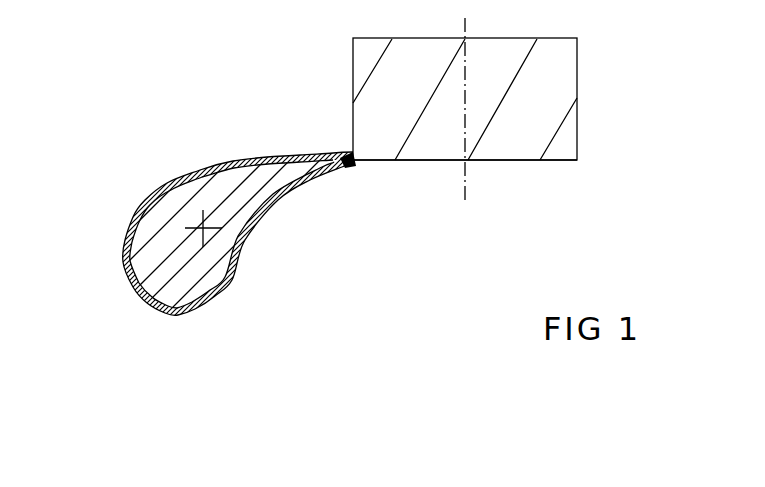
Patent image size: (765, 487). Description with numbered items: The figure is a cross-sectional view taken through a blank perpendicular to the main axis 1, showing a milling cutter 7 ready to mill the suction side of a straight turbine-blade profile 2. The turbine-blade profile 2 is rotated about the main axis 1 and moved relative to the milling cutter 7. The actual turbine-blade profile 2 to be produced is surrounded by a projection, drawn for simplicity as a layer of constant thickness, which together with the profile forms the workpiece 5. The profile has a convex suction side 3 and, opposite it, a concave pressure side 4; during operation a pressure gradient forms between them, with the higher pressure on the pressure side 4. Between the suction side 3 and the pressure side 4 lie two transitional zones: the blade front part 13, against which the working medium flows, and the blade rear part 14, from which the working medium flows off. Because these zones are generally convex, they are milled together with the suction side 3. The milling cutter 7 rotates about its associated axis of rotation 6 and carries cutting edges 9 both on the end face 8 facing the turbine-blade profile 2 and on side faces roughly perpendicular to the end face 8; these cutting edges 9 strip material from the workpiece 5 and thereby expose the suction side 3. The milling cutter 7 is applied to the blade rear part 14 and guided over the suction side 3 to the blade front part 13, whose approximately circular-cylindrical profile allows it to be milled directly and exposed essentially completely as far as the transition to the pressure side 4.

The main axis 1 is at (203, 228).
The turbine-blade profile 2 is at (147, 272).
The suction side 3 is at (213, 168).
The pressure side 4 is at (243, 242).
The workpiece 5 is at (122, 240).
The axis of rotation 6 is at (467, 177).
The milling cutter 7 is at (577, 145).
The end face 8 is at (428, 162).
The cutting edges 9 is at (523, 60).
The blade front part 13 is at (173, 313).
The blade rear part 14 is at (358, 175).